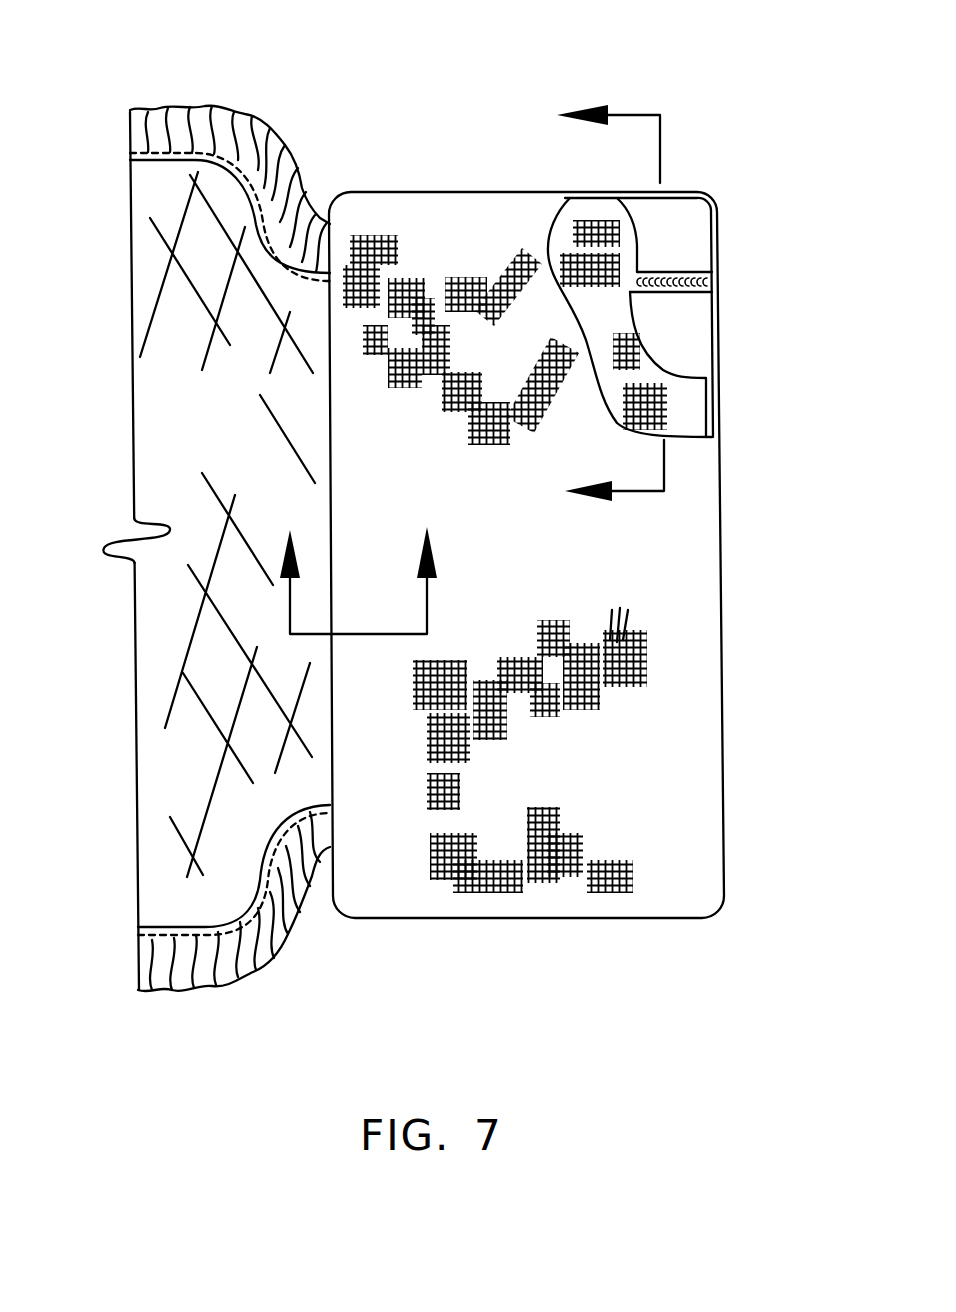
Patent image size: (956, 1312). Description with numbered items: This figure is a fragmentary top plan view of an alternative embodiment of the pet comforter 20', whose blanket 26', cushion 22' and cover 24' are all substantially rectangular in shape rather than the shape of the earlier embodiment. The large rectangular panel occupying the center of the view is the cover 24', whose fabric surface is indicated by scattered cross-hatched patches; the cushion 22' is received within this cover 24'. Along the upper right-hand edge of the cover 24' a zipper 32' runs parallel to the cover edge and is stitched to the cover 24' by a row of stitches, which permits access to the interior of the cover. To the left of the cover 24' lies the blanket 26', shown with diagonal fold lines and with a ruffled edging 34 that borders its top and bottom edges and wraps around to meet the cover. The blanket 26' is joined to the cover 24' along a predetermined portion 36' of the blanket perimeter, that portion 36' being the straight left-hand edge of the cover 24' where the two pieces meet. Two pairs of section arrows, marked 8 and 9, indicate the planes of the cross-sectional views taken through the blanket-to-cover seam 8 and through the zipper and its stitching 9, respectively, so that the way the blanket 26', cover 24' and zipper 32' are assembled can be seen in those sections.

The pet comforter 20' is at (691, 480).
The cushion 22' is at (726, 365).
The cover 24' is at (569, 494).
The blanket 26' is at (184, 551).
The zipper 32' is at (708, 223).
The ruffled skirt 34 is at (283, 935).
The predetermined portion 36' is at (526, 555).
The section line 8- 8 is at (357, 561).
The section line 9- 9 is at (598, 303).